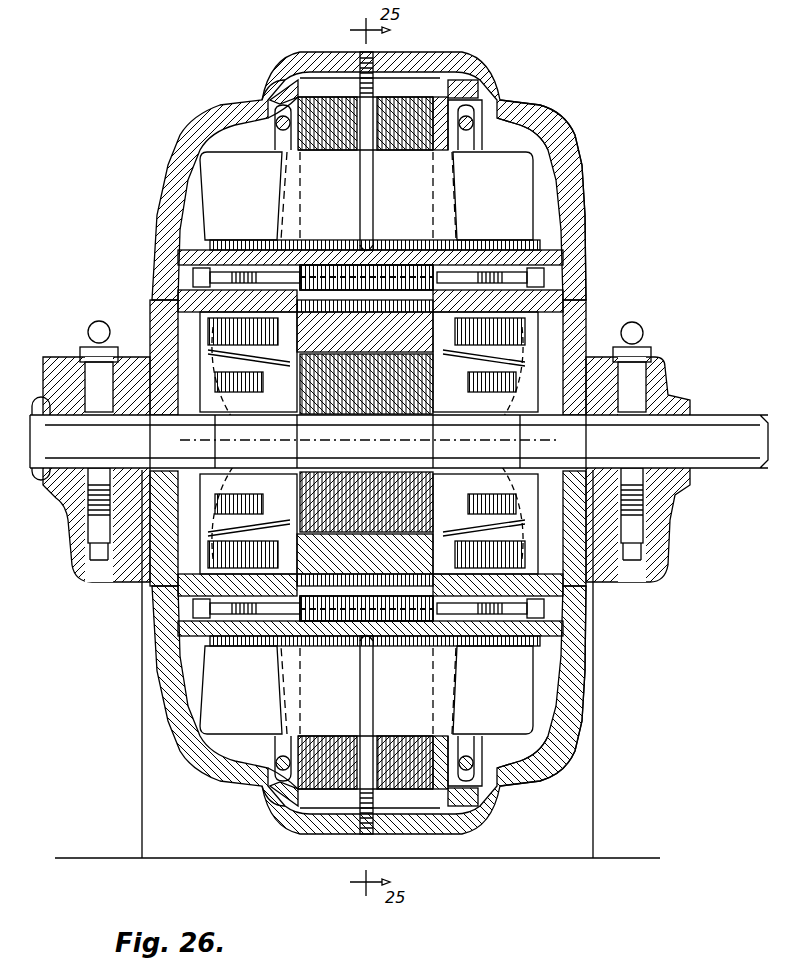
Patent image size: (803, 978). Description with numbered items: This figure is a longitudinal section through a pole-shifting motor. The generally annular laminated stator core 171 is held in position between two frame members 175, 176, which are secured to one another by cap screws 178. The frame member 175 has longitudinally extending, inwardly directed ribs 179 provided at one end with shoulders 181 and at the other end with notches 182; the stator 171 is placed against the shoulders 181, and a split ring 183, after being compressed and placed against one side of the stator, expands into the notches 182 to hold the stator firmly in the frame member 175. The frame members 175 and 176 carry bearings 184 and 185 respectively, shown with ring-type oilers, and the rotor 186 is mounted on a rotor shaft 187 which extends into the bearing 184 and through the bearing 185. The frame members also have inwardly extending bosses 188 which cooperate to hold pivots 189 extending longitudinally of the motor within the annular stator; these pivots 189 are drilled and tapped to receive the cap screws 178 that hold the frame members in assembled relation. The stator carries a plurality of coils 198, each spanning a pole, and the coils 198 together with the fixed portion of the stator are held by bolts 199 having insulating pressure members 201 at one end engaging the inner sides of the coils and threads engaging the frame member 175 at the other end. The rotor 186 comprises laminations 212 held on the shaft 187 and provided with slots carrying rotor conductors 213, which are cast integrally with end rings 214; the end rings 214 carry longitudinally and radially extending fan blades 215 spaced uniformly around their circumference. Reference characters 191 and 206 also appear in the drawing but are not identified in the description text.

The laminated stator core 171 is at (360, 92).
The frame member 175 is at (180, 130).
The frame member 176 is at (560, 142).
The cap screws 178 is at (192, 276).
The ribs 179 is at (412, 78).
The shoulders 181 is at (292, 96).
The notches 182 is at (440, 95).
The split ring 183 is at (483, 82).
The bearing 184 is at (62, 400).
The bearing 185 is at (668, 410).
The rotor 186 is at (196, 373).
The rotor shaft 187 is at (735, 428).
The bosses 188 is at (258, 248).
The pivots 189 is at (334, 268).
The bearing 191 is at (375, 240).
The coils 198 is at (222, 175).
The bolts 199 is at (360, 170).
The insulating pressure members 201 is at (376, 252).
The ring 206 is at (276, 140).
The laminations 212 is at (357, 478).
The rotor conductors 213 is at (344, 605).
The end rings 214 is at (268, 405).
The fan blades 215 is at (505, 375).